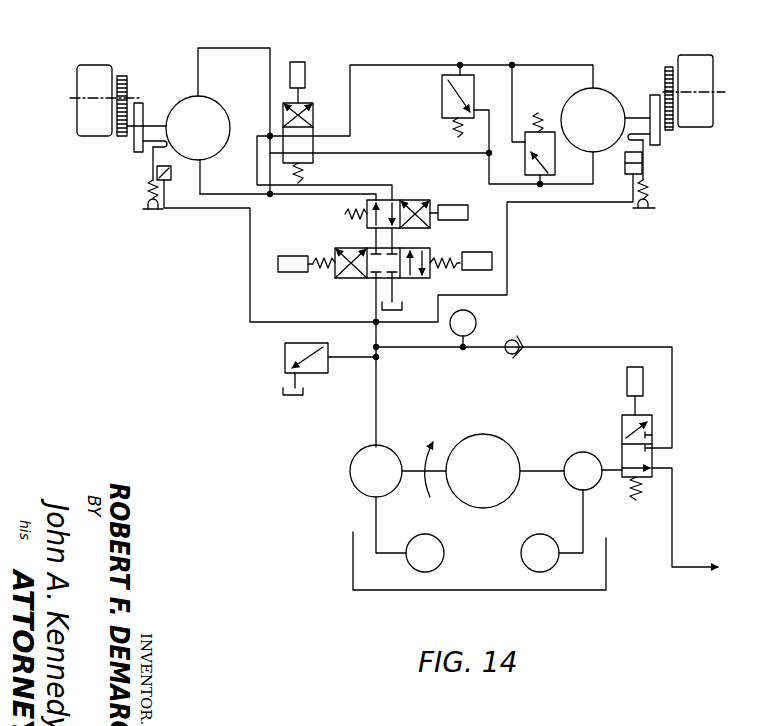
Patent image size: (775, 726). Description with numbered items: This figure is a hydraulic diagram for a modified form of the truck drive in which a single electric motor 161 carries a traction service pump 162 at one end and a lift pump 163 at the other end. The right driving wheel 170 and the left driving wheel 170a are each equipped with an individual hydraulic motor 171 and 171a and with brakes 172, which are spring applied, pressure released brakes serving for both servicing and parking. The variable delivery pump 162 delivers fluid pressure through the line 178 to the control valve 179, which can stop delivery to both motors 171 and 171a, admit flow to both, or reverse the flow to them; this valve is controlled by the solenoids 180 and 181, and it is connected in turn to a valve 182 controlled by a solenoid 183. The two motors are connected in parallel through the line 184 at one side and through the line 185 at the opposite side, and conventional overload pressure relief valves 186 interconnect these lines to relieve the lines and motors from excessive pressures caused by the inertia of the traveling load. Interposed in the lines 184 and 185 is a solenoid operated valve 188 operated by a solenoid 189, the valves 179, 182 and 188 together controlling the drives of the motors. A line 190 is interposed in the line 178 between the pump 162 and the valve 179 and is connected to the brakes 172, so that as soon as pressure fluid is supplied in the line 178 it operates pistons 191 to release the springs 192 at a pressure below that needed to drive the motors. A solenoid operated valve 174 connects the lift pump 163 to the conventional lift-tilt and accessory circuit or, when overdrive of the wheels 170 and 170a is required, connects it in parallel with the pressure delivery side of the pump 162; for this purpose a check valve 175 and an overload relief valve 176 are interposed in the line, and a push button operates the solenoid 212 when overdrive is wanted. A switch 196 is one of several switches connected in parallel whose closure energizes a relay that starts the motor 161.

The electric motor 161 is at (518, 428).
The traction service pump 162 is at (383, 447).
The lift pump 163 is at (585, 452).
The right driving wheel 170 is at (712, 64).
The left driving wheel 170a is at (84, 72).
The hydraulic motor 171 is at (612, 101).
The hydraulic motor 171a is at (253, 76).
The brakes 172 is at (135, 152).
The solenoid operated valve 174 is at (622, 420).
The check valve 175 is at (520, 340).
The overload relief valve 176 is at (327, 374).
The line 178 is at (378, 389).
The control valve 179 is at (350, 278).
The solenoid 180 is at (493, 260).
The solenoid 181 is at (278, 263).
The valve 182 is at (366, 218).
The solenoid 183 is at (478, 182).
The line 184 is at (245, 178).
The line 185 is at (395, 65).
The overload pressure relief valves 186 is at (553, 166).
The solenoid operated valve 188 is at (315, 118).
The solenoid 189 is at (305, 70).
The line 190 is at (250, 252).
The pistons 191 is at (171, 175).
The springs 192 is at (148, 192).
The switch 196 is at (442, 92).
The solenoid 212 is at (638, 382).